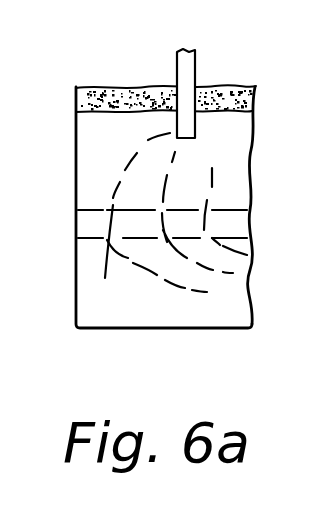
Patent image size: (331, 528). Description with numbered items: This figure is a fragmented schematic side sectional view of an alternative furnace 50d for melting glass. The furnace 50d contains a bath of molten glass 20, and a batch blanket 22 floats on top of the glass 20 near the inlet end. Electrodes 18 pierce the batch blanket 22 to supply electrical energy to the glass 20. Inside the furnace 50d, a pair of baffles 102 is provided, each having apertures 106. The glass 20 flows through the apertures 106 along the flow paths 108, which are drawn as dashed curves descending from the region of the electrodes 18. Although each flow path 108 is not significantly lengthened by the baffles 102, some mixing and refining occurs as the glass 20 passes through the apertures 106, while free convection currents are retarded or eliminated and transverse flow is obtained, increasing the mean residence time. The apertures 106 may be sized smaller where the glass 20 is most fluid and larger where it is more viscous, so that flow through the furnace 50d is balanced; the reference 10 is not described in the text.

The package 10 is at (318, 258).
The electrodes 18 is at (196, 68).
The molten glass 20 is at (130, 147).
The batch blanket 22 is at (122, 100).
The furnace 50d is at (330, 64).
The baffles 102 is at (78, 237).
The apertures 106 is at (125, 210).
The flow paths 108 is at (212, 177).